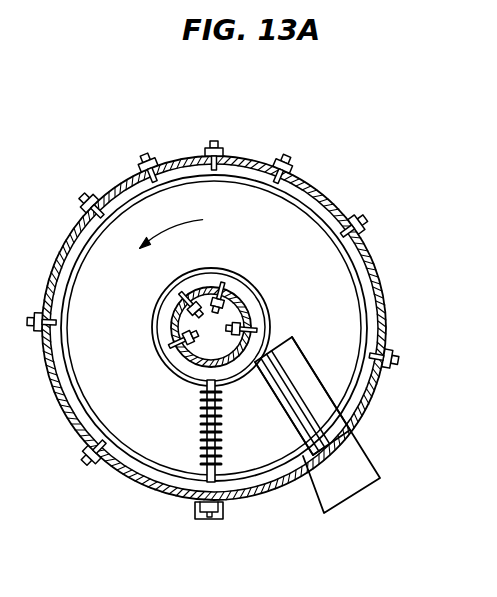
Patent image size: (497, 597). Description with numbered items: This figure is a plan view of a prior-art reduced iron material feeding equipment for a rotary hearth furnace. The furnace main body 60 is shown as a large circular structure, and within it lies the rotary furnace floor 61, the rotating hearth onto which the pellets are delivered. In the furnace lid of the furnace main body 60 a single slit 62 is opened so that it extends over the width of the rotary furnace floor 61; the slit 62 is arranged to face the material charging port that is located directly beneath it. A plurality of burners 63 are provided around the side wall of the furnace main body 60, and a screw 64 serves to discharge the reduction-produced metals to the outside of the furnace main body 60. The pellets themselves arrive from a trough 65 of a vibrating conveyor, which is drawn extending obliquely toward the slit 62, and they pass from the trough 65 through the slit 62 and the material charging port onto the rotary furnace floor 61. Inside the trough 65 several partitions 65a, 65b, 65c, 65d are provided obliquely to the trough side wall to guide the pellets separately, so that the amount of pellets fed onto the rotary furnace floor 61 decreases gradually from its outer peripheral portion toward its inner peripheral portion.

The furnace main body 60 is at (240, 325).
The rotary furnace floor 61 is at (328, 273).
The slit 62 is at (283, 378).
The burner 63 is at (210, 143).
The screw 64 is at (200, 437).
The trough 65 is at (340, 461).
The partition 65a is at (292, 465).
The partition 65b is at (307, 463).
The partition 65c is at (333, 445).
The partition 65d is at (335, 425).